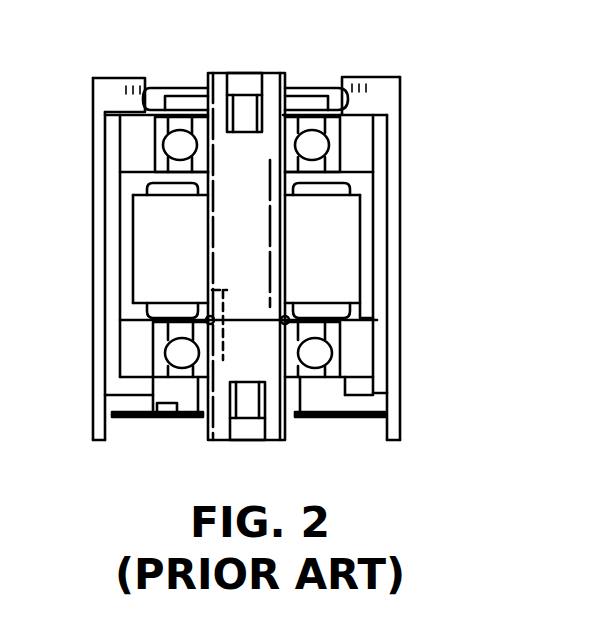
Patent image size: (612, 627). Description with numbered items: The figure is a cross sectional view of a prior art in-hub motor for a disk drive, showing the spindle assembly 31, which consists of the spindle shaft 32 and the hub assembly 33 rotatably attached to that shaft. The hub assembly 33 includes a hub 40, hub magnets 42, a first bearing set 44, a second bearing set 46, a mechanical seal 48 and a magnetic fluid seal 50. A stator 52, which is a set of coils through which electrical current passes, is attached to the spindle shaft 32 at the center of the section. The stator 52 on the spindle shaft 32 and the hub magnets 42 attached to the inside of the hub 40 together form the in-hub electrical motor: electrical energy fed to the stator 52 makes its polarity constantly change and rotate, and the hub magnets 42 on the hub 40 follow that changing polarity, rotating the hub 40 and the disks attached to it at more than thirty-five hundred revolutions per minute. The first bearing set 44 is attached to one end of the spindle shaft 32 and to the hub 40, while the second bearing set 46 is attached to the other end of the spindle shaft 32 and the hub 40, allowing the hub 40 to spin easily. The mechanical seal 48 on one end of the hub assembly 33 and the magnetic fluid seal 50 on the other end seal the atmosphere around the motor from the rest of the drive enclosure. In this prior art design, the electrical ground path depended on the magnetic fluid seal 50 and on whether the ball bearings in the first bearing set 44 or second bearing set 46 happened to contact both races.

The spindle assembly 31 is at (423, 108).
The spindle shaft 32 is at (274, 80).
The hub assembly 33 is at (121, 85).
The hub 40 is at (397, 324).
The hub magnets 42 is at (368, 254).
The first bearing set 44 is at (160, 124).
The second bearing set 46 is at (160, 362).
The mechanical seal 48 is at (355, 388).
The magnetic fluid seal 50 is at (320, 83).
The stator 52 is at (154, 262).